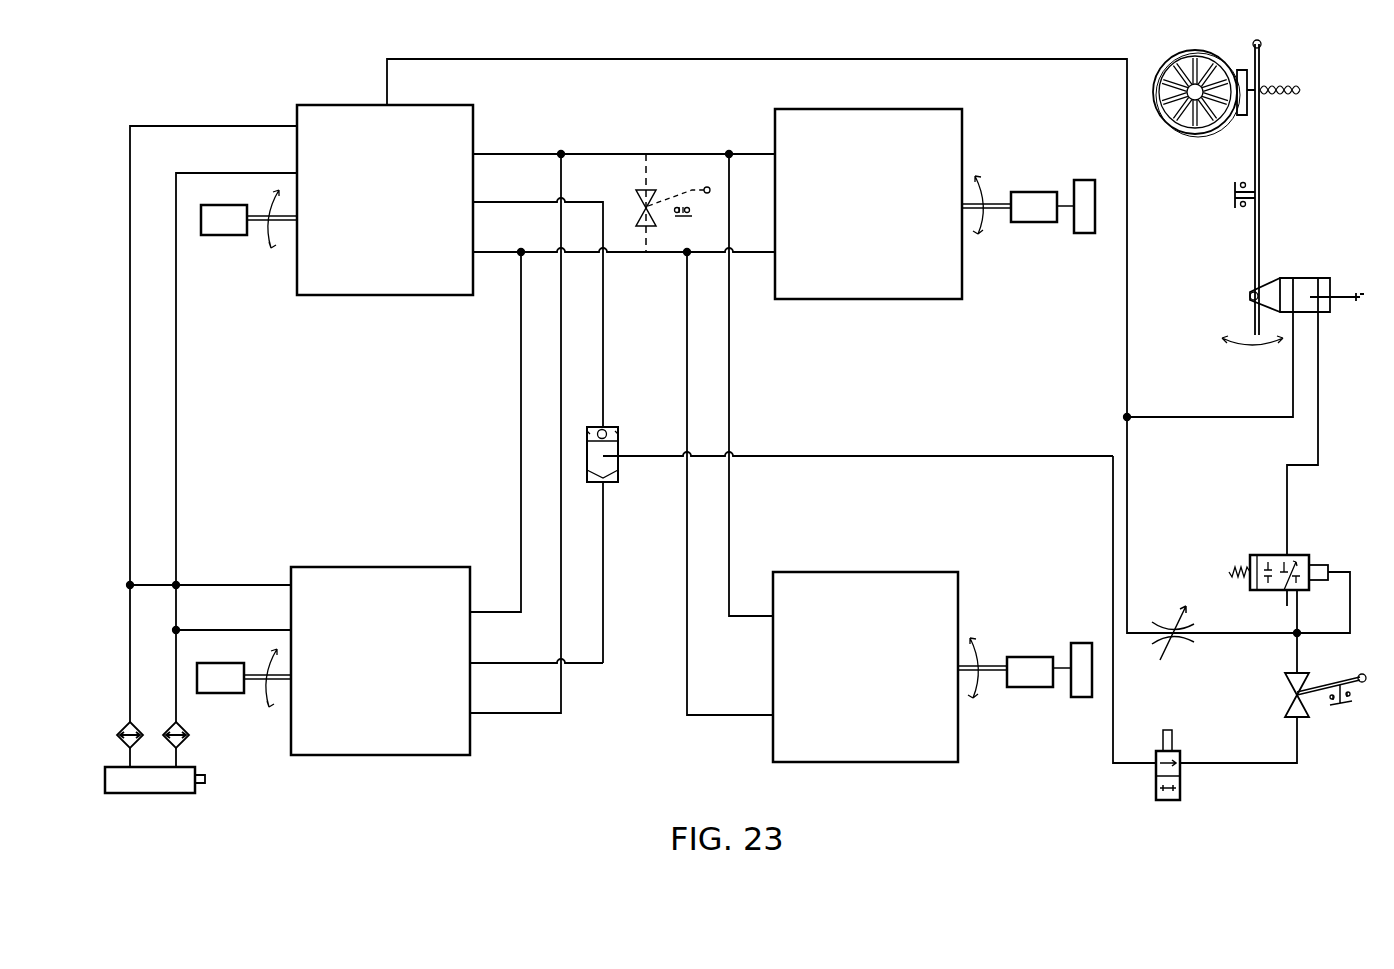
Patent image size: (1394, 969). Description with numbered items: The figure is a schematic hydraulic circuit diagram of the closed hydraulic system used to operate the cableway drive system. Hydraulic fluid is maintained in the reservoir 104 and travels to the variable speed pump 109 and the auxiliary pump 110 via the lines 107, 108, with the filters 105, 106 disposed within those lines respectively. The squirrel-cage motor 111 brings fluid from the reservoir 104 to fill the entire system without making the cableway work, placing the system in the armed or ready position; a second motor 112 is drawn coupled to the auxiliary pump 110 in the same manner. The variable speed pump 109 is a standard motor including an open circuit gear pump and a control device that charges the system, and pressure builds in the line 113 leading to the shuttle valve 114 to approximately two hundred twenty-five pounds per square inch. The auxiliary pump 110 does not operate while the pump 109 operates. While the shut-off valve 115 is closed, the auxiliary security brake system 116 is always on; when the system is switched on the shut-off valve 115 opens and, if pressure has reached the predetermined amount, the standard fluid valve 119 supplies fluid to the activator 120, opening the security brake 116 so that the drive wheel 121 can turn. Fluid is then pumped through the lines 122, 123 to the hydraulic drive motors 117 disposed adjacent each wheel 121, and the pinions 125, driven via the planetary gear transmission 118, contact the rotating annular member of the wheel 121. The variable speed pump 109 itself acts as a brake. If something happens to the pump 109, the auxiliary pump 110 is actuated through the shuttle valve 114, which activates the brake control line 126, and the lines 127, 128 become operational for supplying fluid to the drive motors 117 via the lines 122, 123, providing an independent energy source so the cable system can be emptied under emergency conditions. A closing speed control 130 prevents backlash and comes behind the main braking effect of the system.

The reservoir 104 is at (191, 766).
The filter 105 is at (118, 726).
The filter 106 is at (181, 727).
The line 107 is at (130, 342).
The line 108 is at (177, 342).
The variable speed pump 109 is at (458, 133).
The auxiliary pump 110 is at (456, 593).
The squirrel-cage motor 111 is at (233, 209).
The auxiliary pump drive motor 112 is at (233, 669).
The line 113 is at (582, 198).
The shuttle valve 114 is at (610, 426).
The shut-off valve 115 is at (1180, 754).
The auxiliary security brake system 116 is at (1290, 59).
The hydraulic drive motor 117 is at (944, 131).
The planetary gear transmission 118 is at (1032, 198).
The fluid valve 119 is at (1304, 555).
The activator 120 is at (1310, 278).
The drive wheel 121 is at (1206, 53).
The line 122 is at (602, 156).
The line 123 is at (622, 256).
The pinion 125 is at (1085, 190).
The brake control line 126 is at (604, 528).
The line 127 is at (521, 339).
The line 128 is at (561, 338).
The closing speed control 130 is at (1182, 598).